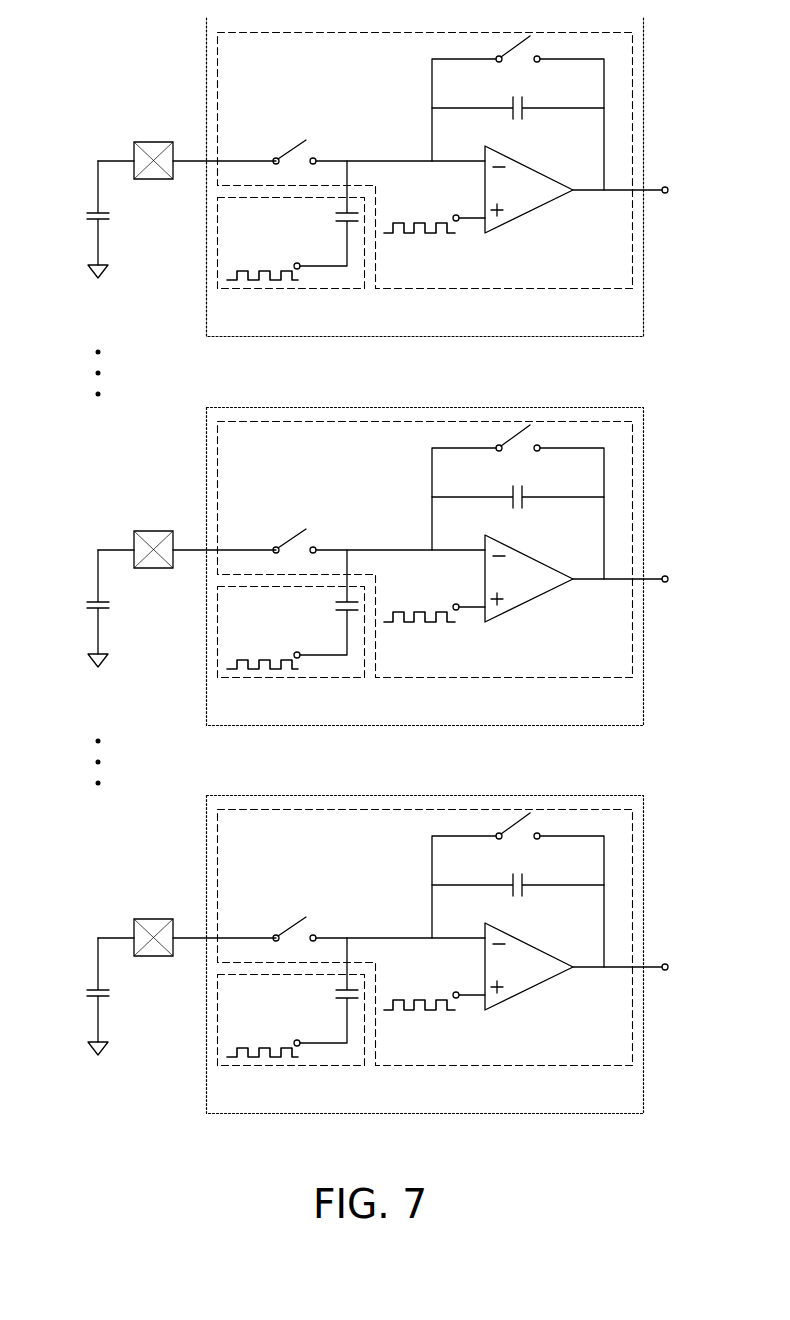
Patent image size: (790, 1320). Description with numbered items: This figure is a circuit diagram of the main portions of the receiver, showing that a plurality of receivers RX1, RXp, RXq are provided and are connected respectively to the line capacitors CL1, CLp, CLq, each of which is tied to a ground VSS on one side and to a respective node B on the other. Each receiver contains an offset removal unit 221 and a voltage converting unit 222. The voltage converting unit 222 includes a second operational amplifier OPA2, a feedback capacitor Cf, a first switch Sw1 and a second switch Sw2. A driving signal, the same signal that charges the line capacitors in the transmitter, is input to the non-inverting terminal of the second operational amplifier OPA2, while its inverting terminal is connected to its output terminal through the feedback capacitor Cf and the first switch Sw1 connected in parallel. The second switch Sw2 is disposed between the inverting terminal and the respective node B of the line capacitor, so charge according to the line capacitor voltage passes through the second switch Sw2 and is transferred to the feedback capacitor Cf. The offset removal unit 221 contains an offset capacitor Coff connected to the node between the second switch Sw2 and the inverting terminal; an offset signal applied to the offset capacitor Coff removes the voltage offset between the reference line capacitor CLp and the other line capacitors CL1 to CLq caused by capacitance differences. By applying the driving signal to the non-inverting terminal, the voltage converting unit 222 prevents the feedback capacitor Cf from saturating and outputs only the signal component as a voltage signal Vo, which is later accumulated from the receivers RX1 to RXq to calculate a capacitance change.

The offset removal unit 221 is at (333, 288).
The voltage converting unit 222 is at (588, 288).
The node B is at (187, 527).
The line capacitor CL1 is at (75, 213).
The reference line capacitor CLp is at (75, 602).
The line capacitor CLq is at (75, 990).
The ground voltage VSS is at (96, 674).
The offset capacitor Coff is at (322, 602).
The first switch Sw1 is at (518, 501).
The second switch Sw2 is at (379, 528).
The feedback capacitor Cf is at (518, 507).
The second operational amplifier OPA2 is at (529, 578).
The voltage signal Vo is at (637, 578).
The receiver RX1 is at (527, 336).
The receiver RXp is at (527, 725).
The receiver RXq is at (527, 1113).